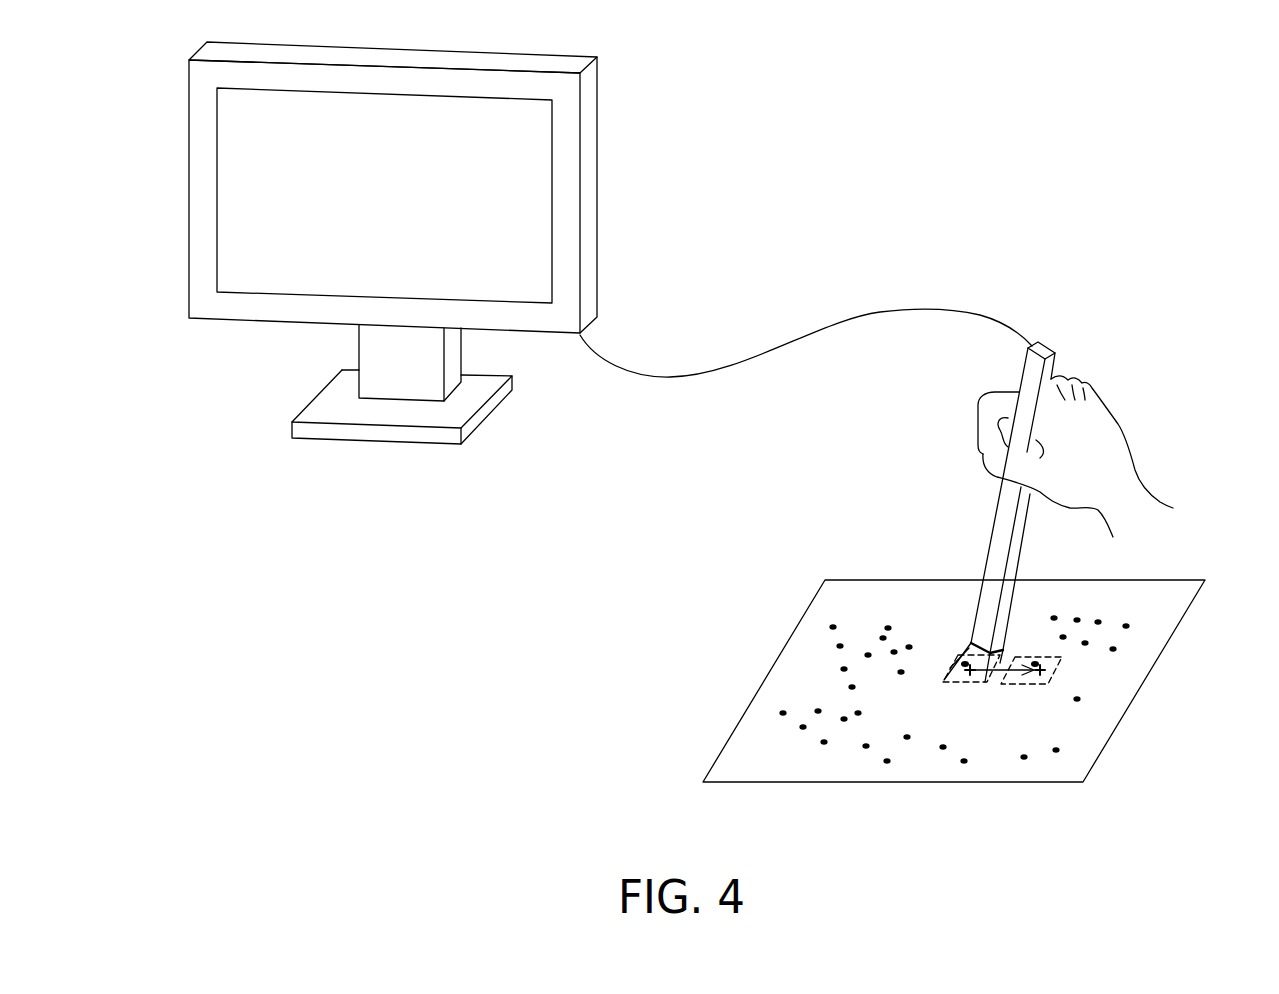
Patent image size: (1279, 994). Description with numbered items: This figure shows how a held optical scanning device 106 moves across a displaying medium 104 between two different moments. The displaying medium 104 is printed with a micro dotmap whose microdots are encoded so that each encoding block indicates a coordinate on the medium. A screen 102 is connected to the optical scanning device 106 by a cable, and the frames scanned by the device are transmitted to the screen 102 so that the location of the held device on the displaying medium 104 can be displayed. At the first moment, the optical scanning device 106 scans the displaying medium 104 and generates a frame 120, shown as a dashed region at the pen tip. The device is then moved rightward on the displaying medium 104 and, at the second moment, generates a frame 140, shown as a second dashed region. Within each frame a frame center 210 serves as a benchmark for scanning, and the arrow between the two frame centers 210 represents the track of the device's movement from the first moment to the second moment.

The screen 102 is at (597, 185).
The displaying medium 104 is at (1167, 595).
The optical scanning device 106 is at (1053, 351).
The frame 120 is at (985, 681).
The frame 140 is at (1038, 680).
The frame center 210 is at (957, 676).